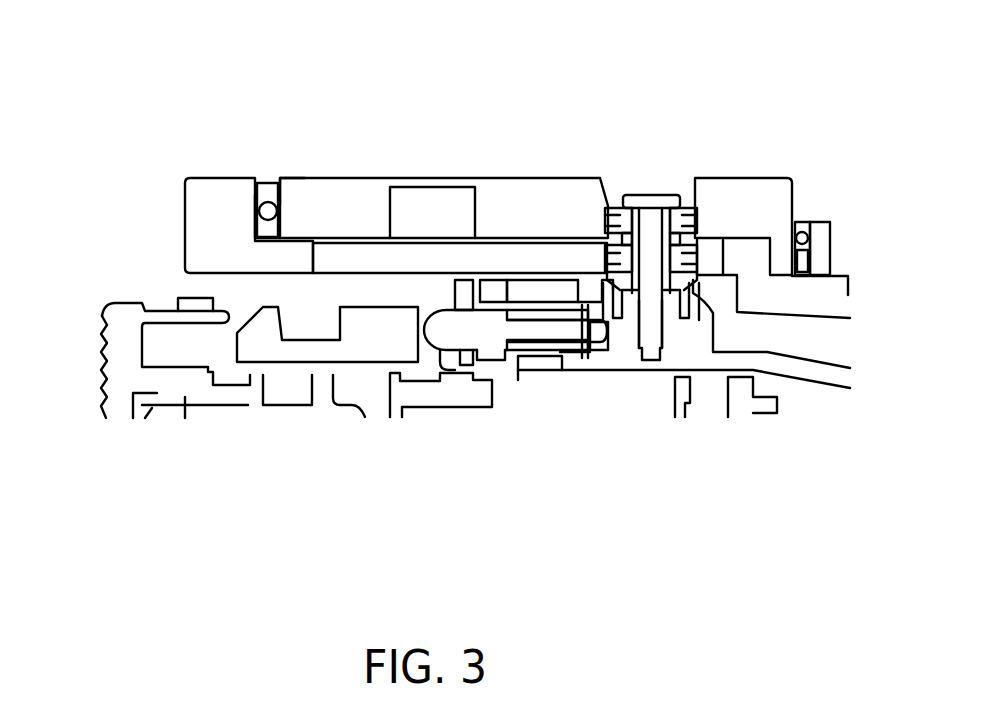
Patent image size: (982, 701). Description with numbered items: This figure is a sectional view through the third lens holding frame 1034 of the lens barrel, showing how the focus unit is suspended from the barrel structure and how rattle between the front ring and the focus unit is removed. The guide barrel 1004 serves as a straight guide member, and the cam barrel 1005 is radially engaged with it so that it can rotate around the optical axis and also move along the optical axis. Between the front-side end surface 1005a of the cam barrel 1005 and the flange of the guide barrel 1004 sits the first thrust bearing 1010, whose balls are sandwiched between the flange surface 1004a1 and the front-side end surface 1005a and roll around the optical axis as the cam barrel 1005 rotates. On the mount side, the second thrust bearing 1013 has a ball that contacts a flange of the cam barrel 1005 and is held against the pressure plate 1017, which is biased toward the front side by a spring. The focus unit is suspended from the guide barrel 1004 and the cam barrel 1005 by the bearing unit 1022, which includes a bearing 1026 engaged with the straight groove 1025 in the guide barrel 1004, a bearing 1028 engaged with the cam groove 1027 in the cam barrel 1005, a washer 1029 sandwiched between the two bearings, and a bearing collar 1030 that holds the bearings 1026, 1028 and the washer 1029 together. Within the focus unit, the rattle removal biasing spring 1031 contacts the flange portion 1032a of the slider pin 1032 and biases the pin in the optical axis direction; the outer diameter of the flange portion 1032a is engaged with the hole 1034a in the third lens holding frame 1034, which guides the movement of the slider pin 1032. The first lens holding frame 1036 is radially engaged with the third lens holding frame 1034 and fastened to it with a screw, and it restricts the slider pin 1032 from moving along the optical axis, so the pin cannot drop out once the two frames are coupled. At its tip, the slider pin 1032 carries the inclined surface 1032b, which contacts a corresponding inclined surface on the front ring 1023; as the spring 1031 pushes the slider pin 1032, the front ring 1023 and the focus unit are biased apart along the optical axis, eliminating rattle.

The guide barrel 1004 is at (217, 252).
The flange surface 1004a1 is at (256, 211).
The cam barrel 1005 is at (348, 197).
The front-side end surface 1005a is at (280, 183).
The first thrust bearing 1010 is at (262, 180).
The second thrust bearing 1013 is at (803, 222).
The pressure plate 1017 is at (823, 240).
The bearing unit 1022 is at (652, 192).
The front ring 1023 is at (256, 352).
The straight groove 1025 is at (380, 255).
The bearing 1026 is at (707, 237).
The cam groove 1027 is at (608, 203).
The bearing 1028 is at (692, 200).
The washer 1029 is at (693, 233).
The bearing collar 1030 is at (674, 283).
The rattle removal biasing spring 1031 is at (557, 352).
The slider pin 1032 is at (538, 333).
The flange portion 1032a is at (490, 352).
The inclined surface 1032b is at (427, 347).
The third lens holding frame 1034 is at (809, 376).
The hole 1034a is at (510, 300).
The first lens holding frame 1036 is at (323, 395).